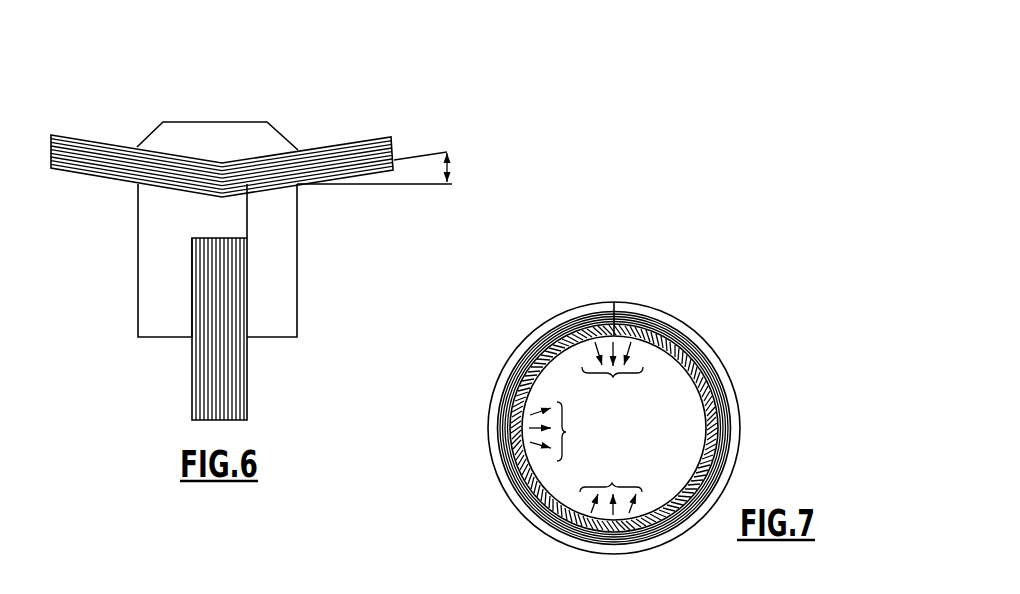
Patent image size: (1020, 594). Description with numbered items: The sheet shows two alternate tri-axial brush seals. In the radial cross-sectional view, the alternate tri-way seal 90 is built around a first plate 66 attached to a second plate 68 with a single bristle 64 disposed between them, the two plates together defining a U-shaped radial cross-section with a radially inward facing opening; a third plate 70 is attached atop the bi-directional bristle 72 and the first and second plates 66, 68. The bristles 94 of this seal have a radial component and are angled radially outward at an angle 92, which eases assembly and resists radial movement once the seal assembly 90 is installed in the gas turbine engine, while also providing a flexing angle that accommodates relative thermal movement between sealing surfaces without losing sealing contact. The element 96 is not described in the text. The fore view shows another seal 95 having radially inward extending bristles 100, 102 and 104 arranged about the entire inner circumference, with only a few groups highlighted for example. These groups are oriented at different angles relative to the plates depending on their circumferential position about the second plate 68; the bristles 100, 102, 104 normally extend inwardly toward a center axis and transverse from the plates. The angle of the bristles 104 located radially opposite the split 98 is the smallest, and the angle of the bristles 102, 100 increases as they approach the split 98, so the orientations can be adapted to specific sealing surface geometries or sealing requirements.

In FIG. 6, the alternate tri-way seal 90 is at (262, 84).
In FIG. 6, the angle 92 is at (449, 167).
In FIG. 6, the bristles 94 is at (97, 152).
In FIG. 6, the forming cap 96 is at (195, 143).
In FIG. 6, the single bristle 64 is at (233, 368).
In FIG. 6, the first plate 66 is at (157, 287).
In FIG. 6, the second plate 68 is at (282, 283).
In FIG. 7, the second plate 68 is at (706, 414).
In FIG. 7, the seal 95 is at (714, 303).
In FIG. 7, the split 98 is at (614, 301).
In FIG. 7, the third plate 70 is at (706, 359).
In FIG. 7, the bi-directional bristle 72 is at (715, 384).
In FIG. 7, the bristles 100 is at (612, 373).
In FIG. 7, the bristles 102 is at (565, 432).
In FIG. 7, the bristles 104 is at (611, 484).